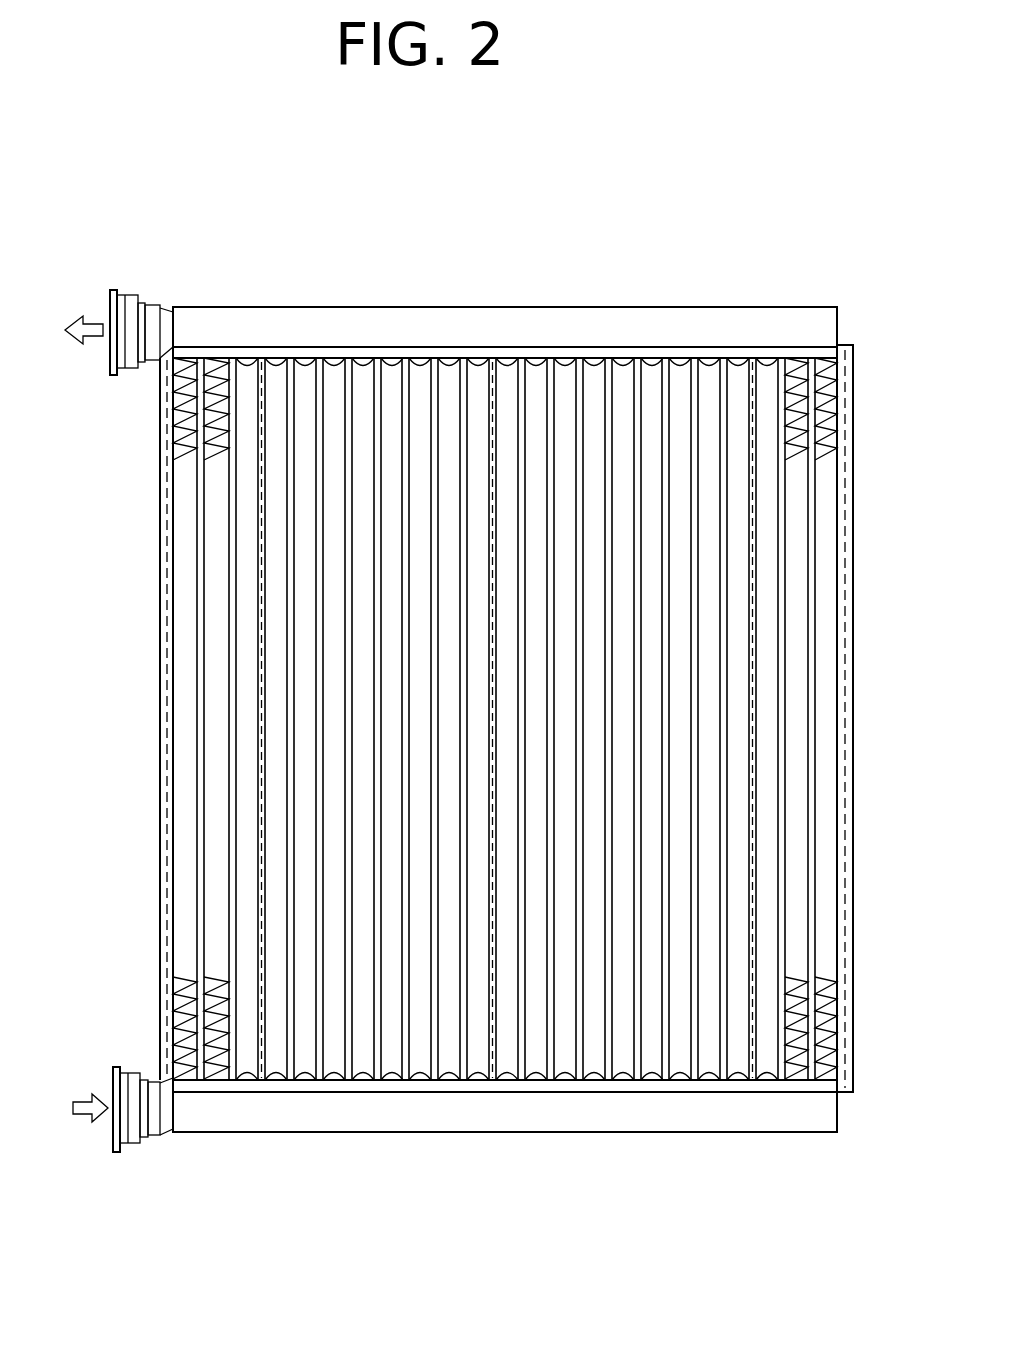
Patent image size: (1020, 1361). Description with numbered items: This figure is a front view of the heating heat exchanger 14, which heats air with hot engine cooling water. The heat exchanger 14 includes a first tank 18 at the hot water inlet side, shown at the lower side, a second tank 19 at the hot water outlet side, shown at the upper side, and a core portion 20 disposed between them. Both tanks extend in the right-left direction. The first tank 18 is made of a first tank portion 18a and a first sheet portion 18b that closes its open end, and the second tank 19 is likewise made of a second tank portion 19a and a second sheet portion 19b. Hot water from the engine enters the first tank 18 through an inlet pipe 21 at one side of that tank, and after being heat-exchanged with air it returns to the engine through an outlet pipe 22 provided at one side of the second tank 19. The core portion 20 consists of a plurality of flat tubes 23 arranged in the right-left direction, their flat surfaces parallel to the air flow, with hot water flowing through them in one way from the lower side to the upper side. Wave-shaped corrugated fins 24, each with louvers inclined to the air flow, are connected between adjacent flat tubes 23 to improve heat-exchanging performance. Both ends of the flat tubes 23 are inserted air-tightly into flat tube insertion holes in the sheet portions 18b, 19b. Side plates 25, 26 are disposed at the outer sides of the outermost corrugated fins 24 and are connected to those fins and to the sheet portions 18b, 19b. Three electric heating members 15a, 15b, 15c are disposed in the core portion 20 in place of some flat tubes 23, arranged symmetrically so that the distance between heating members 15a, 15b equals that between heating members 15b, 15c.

The heating heat exchanger 14 is at (150, 618).
The electric heating member 15a is at (258, 762).
The electric heating member 15b is at (492, 420).
The electric heating member 15c is at (757, 824).
The first tank 18 is at (505, 1153).
The first tank portion 18a is at (300, 1115).
The first sheet portion 18b is at (475, 1085).
The second tank 19 is at (505, 295).
The second tank portion 19a is at (305, 322).
The second sheet portion 19b is at (438, 352).
The core portion 20 is at (302, 680).
The inlet pipe 21 is at (127, 1152).
The outlet pipe 22 is at (121, 298).
The flat tube 23 is at (228, 818).
The corrugated fin 24 is at (215, 990).
The side plate 25 is at (160, 468).
The side plate 26 is at (853, 918).